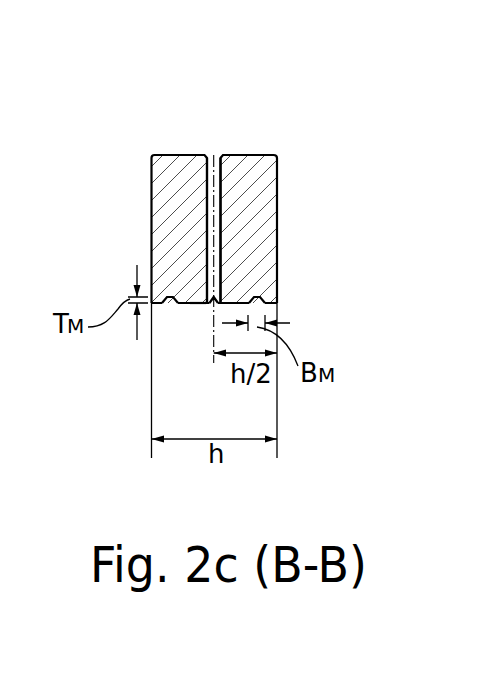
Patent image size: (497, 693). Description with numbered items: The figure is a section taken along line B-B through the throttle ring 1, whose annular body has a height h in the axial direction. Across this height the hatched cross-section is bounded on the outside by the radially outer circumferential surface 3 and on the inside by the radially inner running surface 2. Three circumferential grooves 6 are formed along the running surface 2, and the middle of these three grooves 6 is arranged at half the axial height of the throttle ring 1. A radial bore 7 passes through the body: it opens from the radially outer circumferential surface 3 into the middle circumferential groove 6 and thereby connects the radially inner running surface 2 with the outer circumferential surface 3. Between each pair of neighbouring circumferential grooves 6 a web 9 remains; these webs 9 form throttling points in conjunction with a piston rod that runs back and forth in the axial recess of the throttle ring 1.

The throttle ring 1 is at (124, 90).
The radially inner running surface 2 is at (158, 302).
The radially outer circumferential surface 3 is at (250, 155).
The circumferential grooves 6 is at (213, 298).
The radial bore 7 is at (212, 201).
The webs 9 is at (197, 306).